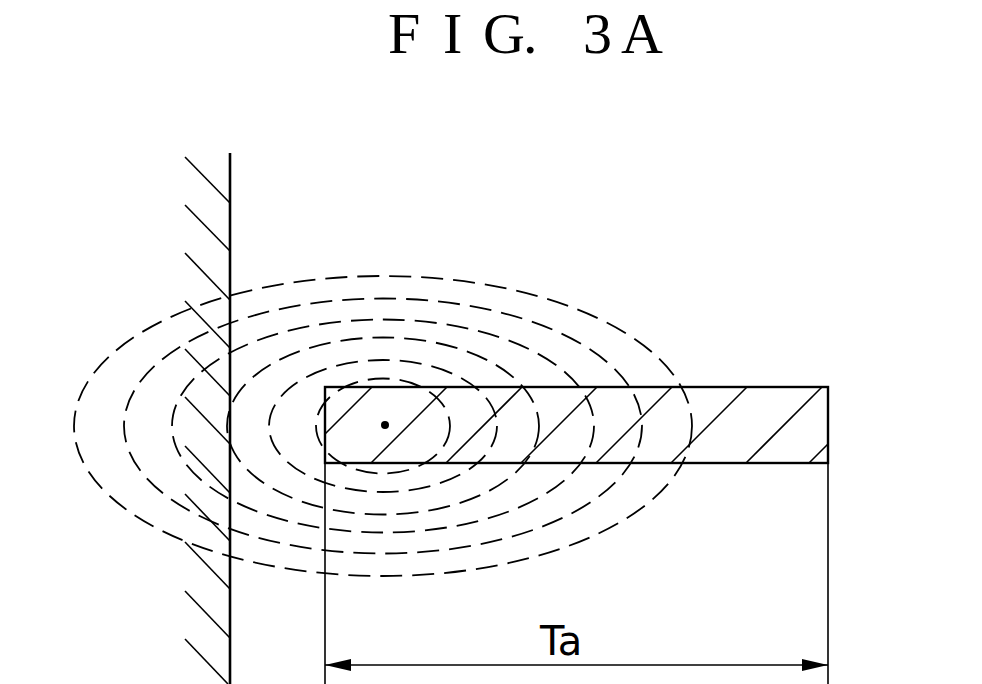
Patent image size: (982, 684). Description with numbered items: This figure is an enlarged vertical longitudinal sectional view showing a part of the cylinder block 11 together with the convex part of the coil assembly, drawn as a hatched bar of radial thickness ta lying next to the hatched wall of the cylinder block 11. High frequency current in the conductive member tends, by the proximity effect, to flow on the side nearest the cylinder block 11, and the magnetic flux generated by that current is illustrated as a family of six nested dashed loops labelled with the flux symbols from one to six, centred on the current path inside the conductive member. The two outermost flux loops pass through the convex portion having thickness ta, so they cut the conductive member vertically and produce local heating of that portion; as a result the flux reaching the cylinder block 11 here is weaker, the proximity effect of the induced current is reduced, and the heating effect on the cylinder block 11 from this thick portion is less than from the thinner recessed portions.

The cylinder block 11 is at (200, 207).